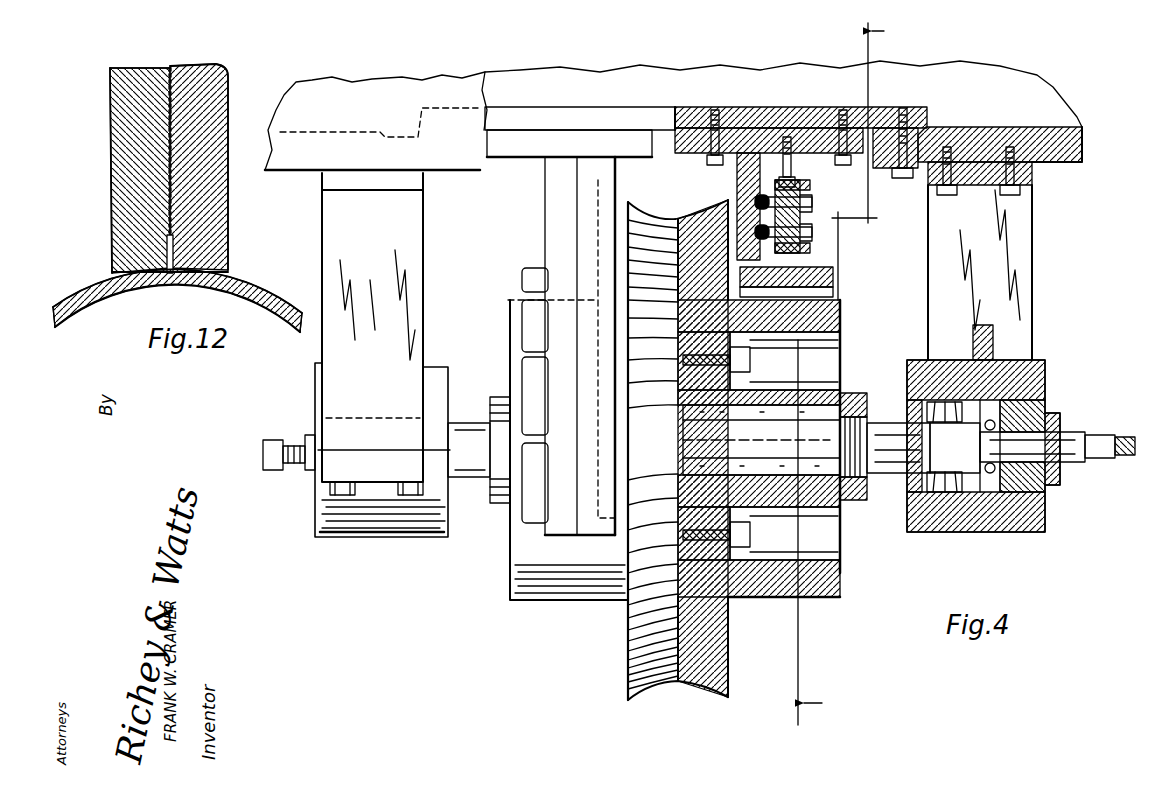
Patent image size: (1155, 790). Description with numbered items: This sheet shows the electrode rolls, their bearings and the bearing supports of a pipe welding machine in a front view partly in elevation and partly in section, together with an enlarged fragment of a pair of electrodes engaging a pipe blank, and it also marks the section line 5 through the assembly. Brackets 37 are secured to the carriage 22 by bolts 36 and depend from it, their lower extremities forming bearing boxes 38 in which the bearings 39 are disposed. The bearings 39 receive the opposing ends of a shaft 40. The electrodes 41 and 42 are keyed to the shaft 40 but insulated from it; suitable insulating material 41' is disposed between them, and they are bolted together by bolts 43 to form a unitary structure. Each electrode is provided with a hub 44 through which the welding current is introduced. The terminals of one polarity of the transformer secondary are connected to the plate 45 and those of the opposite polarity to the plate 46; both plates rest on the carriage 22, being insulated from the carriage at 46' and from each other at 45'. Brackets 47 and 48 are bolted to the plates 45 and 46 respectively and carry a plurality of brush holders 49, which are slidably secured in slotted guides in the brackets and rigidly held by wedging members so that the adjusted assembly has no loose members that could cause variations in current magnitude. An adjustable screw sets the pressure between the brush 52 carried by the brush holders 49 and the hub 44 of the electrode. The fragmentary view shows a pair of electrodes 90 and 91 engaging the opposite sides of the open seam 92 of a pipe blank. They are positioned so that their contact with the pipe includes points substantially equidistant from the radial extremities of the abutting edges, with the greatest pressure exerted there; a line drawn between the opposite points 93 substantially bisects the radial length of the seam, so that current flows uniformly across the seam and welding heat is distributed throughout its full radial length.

In FIG. 4, the carriage 22 is at (992, 127).
In FIG. 4, the bolts 36 is at (1033, 180).
In FIG. 4, the brackets 37 is at (413, 283).
In FIG. 4, the bearing boxes 38 is at (1002, 405).
In FIG. 4, the bearings 39 is at (950, 517).
In FIG. 4, the shaft 40 is at (890, 470).
In FIG. 4, the electrode 41 is at (732, 448).
In FIG. 4, the insulating material 41' is at (654, 450).
In FIG. 4, the electrode 42 is at (640, 653).
In FIG. 4, the bolts 43 is at (750, 362).
In FIG. 4, the hub 44 is at (522, 572).
In FIG. 4, the plate 45 is at (801, 112).
In FIG. 4, the insulation 45' is at (712, 76).
In FIG. 4, the plate 46 is at (580, 117).
In FIG. 4, the insulation 46' is at (915, 104).
In FIG. 4, the bracket 47 is at (810, 170).
In FIG. 4, the bracket 48 is at (563, 235).
In FIG. 4, the brush holders 49 is at (525, 392).
In FIG. 4, the brush 52 is at (838, 292).
In FIG. 4, the section line 5- 5 is at (851, 374).
In FIG. 12, the electrode 90 is at (216, 212).
In FIG. 12, the electrode 91 is at (128, 188).
In FIG. 12, the open seam 92 is at (170, 282).
In FIG. 12, the opposite points 93 is at (110, 278).